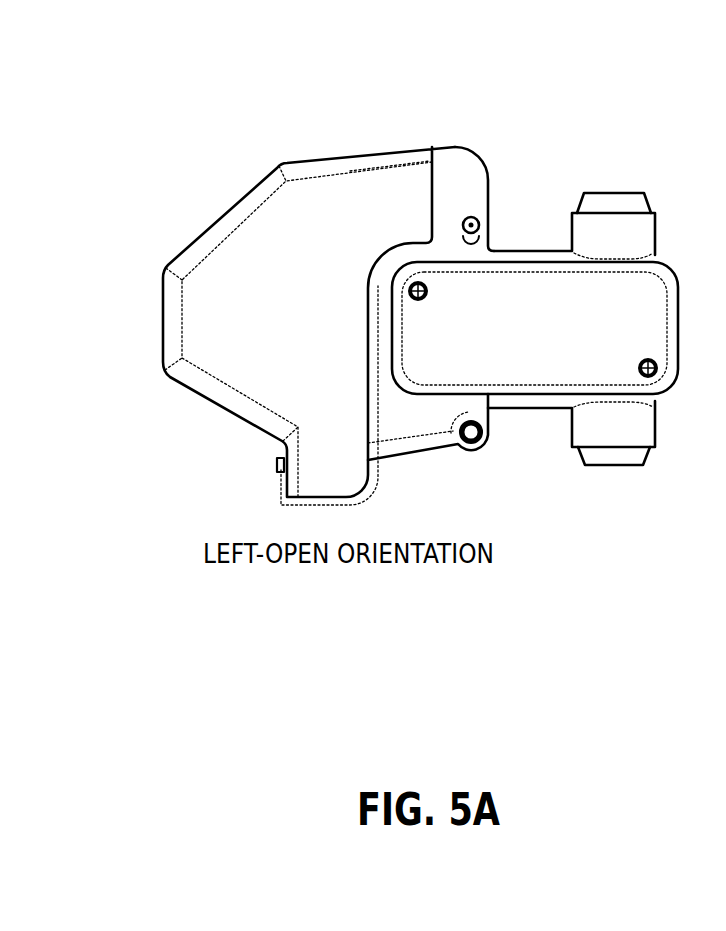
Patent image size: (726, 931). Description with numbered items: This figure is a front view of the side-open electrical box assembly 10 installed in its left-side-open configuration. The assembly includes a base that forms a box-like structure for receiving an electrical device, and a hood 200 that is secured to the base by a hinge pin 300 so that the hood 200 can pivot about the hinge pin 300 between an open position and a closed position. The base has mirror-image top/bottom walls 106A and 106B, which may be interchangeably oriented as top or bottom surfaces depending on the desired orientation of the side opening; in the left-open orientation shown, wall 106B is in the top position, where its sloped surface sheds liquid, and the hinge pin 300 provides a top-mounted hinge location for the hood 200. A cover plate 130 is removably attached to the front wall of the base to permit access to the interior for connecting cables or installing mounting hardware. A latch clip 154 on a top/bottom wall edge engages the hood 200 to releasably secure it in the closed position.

The side-open electrical box assembly 10 is at (260, 72).
The hood 200 is at (268, 180).
The hinge pin 300 is at (470, 216).
The top/bottom wall 106B is at (533, 250).
The cover plate 130 is at (503, 358).
The top/bottom wall 106A is at (547, 408).
The latch clip 154 is at (278, 466).